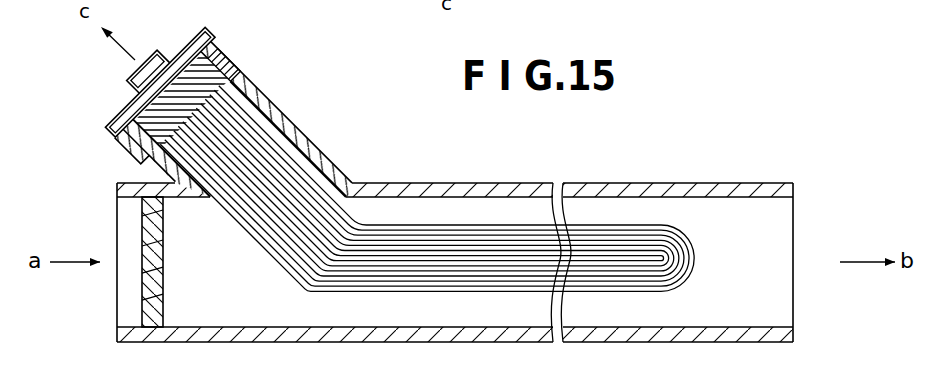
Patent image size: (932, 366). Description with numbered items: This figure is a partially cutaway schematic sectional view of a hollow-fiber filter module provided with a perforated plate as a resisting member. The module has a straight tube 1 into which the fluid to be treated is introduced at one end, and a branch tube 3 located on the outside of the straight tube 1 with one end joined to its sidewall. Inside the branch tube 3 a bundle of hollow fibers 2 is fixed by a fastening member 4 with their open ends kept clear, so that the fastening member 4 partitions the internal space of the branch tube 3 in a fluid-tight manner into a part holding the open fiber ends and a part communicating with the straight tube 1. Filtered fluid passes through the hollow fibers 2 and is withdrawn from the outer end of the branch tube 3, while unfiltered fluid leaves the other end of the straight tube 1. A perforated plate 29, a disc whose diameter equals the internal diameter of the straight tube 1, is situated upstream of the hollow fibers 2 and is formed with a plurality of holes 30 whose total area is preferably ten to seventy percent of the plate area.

The straight tube 1 is at (444, 183).
The hollow fibers 2 is at (272, 113).
The branch tube 3 is at (283, 163).
The fastening member 4 is at (232, 80).
The perforated plate 29 is at (143, 282).
The holes 30 is at (150, 307).